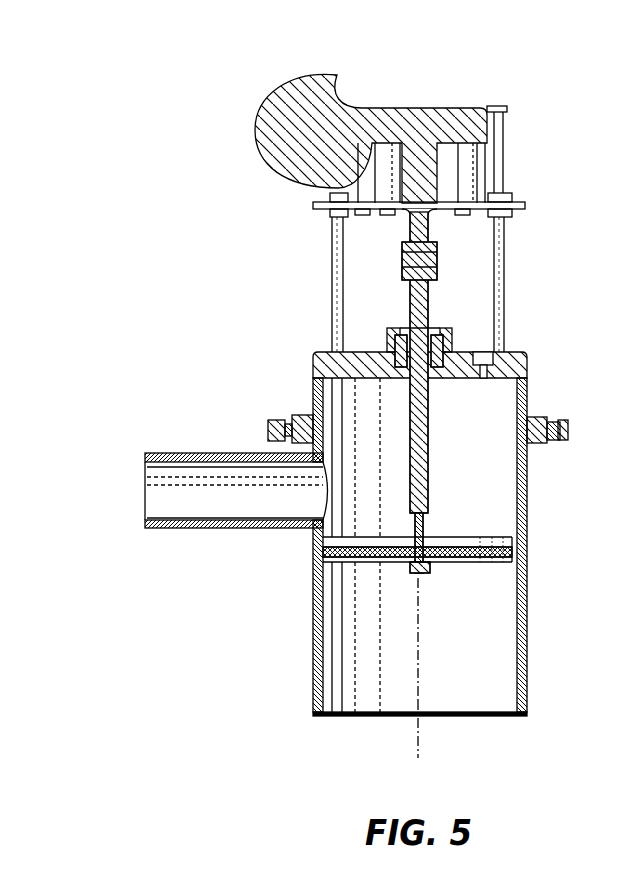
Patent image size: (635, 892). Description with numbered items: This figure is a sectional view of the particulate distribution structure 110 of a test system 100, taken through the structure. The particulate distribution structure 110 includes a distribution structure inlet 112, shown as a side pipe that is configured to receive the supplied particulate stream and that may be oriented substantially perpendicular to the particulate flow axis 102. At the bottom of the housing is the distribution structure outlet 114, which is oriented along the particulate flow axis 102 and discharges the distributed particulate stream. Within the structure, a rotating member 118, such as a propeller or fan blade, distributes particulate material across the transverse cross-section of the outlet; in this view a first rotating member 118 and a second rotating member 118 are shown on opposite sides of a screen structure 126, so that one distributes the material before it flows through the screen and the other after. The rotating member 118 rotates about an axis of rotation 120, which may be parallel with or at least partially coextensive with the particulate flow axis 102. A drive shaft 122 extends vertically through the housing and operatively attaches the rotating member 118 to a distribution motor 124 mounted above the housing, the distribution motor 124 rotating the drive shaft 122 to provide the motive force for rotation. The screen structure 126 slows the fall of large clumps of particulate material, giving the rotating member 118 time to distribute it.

The fluid system 100 is at (146, 195).
The particulate flow axis 102 is at (420, 742).
The particulate distribution structure 110 is at (184, 278).
The distribution structure inlet 112 is at (195, 452).
The distribution structure outlet 114 is at (347, 717).
The rotating member 118 is at (419, 553).
The axis of rotation 120 is at (418, 665).
The drive shaft 122 is at (428, 483).
The distribution motor 124 is at (268, 100).
The screen structure 126 is at (313, 553).